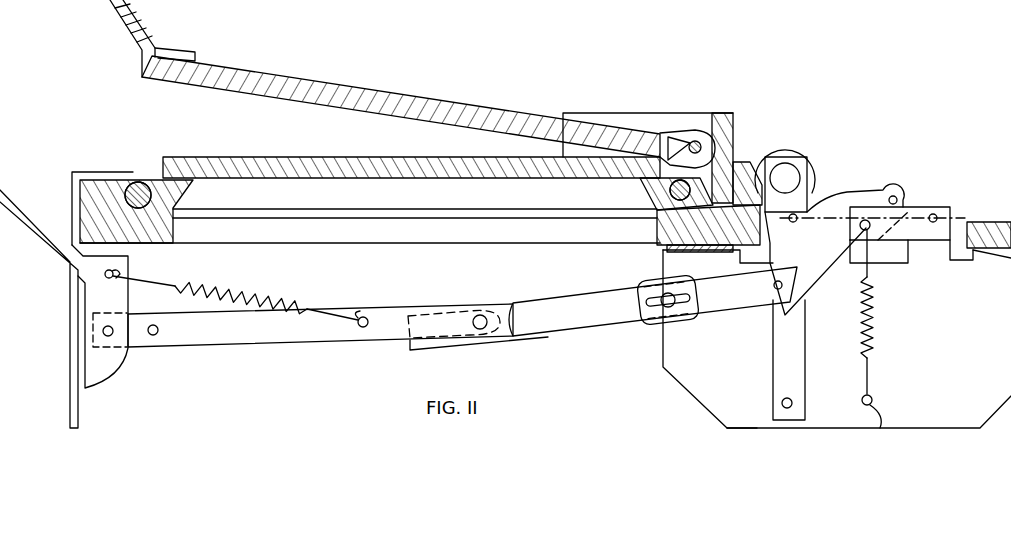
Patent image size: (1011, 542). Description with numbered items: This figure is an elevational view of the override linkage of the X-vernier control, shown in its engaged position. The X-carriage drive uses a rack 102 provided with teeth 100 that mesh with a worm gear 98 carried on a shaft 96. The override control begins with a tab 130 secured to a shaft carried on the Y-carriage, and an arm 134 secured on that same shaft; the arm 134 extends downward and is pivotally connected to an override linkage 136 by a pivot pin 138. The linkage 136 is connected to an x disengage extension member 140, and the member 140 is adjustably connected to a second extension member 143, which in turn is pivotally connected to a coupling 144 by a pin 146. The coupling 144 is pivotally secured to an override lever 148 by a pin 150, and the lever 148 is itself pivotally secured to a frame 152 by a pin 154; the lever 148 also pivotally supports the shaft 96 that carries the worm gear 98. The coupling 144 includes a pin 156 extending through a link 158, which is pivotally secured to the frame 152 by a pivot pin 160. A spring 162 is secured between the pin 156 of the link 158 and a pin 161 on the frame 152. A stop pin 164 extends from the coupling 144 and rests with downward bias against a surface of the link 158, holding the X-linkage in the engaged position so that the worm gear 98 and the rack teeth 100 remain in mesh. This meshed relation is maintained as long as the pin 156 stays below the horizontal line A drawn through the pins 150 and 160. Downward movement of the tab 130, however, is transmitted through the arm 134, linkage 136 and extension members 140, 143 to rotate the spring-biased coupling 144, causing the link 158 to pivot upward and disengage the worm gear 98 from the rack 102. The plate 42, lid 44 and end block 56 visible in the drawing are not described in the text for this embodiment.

The base plate 42 is at (362, 163).
The lid 44 is at (293, 82).
The end block with seal 56 is at (136, 180).
The shaft 96 is at (800, 178).
The worm gear 98 is at (800, 150).
The teeth 100 is at (753, 160).
The rack 102 is at (738, 157).
The tab 130 is at (37, 210).
The arm 134 is at (92, 295).
The override linkage 136 is at (550, 345).
The pivot pin 138 is at (367, 337).
The x disengage extension member 140 is at (610, 315).
The second extension member 143 is at (717, 302).
The coupling 144 is at (823, 273).
The pin 146 is at (778, 287).
The override lever 148 is at (783, 370).
The pin 150 is at (795, 223).
The frame 152 is at (758, 422).
The pin 154 is at (790, 410).
The pin 156 is at (867, 222).
The link 158 is at (920, 208).
The pivot pin 160 is at (935, 225).
The pin 161 is at (880, 428).
The spring 162 is at (873, 297).
The stop pin 164 is at (898, 200).
The horizontal line A is at (953, 215).